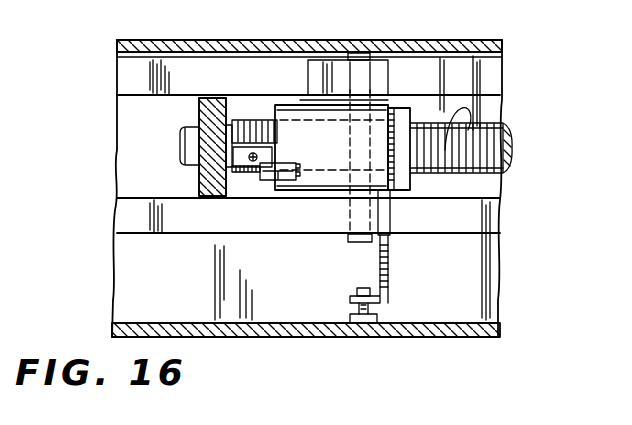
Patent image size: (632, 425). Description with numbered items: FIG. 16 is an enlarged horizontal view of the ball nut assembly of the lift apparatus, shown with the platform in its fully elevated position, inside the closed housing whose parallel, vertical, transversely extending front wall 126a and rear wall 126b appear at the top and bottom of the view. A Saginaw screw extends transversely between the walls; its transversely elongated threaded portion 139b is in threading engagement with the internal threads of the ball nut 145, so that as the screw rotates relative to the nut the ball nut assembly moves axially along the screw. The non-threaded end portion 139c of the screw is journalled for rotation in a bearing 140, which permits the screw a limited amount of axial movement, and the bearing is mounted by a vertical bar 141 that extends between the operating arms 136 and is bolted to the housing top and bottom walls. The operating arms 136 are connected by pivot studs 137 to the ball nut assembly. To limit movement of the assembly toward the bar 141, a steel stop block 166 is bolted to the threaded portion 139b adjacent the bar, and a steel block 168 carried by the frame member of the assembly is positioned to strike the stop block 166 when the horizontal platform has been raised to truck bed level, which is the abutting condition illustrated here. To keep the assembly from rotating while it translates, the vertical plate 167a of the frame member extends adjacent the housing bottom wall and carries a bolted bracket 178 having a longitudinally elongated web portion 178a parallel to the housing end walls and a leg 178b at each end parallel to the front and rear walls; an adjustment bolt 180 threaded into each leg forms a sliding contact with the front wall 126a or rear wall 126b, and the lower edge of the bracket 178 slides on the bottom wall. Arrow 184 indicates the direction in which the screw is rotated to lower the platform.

The front wall 126a is at (455, 40).
The rear wall 126b is at (160, 323).
The operating arms 136 is at (120, 78).
The pivot studs 137 is at (360, 52).
The threaded portion 139b is at (508, 126).
The non-threaded end portion 139c is at (182, 143).
The bearing 140 is at (222, 70).
The vertical bar 141 is at (222, 185).
The ball nut 145 is at (396, 108).
The stop block 166 is at (268, 105).
The vertical plate 167a is at (392, 196).
The steel block 168 is at (265, 181).
The bracket 178 is at (389, 256).
The web portion 178a is at (390, 272).
The leg 178b is at (355, 298).
The adjustment bolt 180 is at (380, 318).
The arrow 184 is at (462, 114).